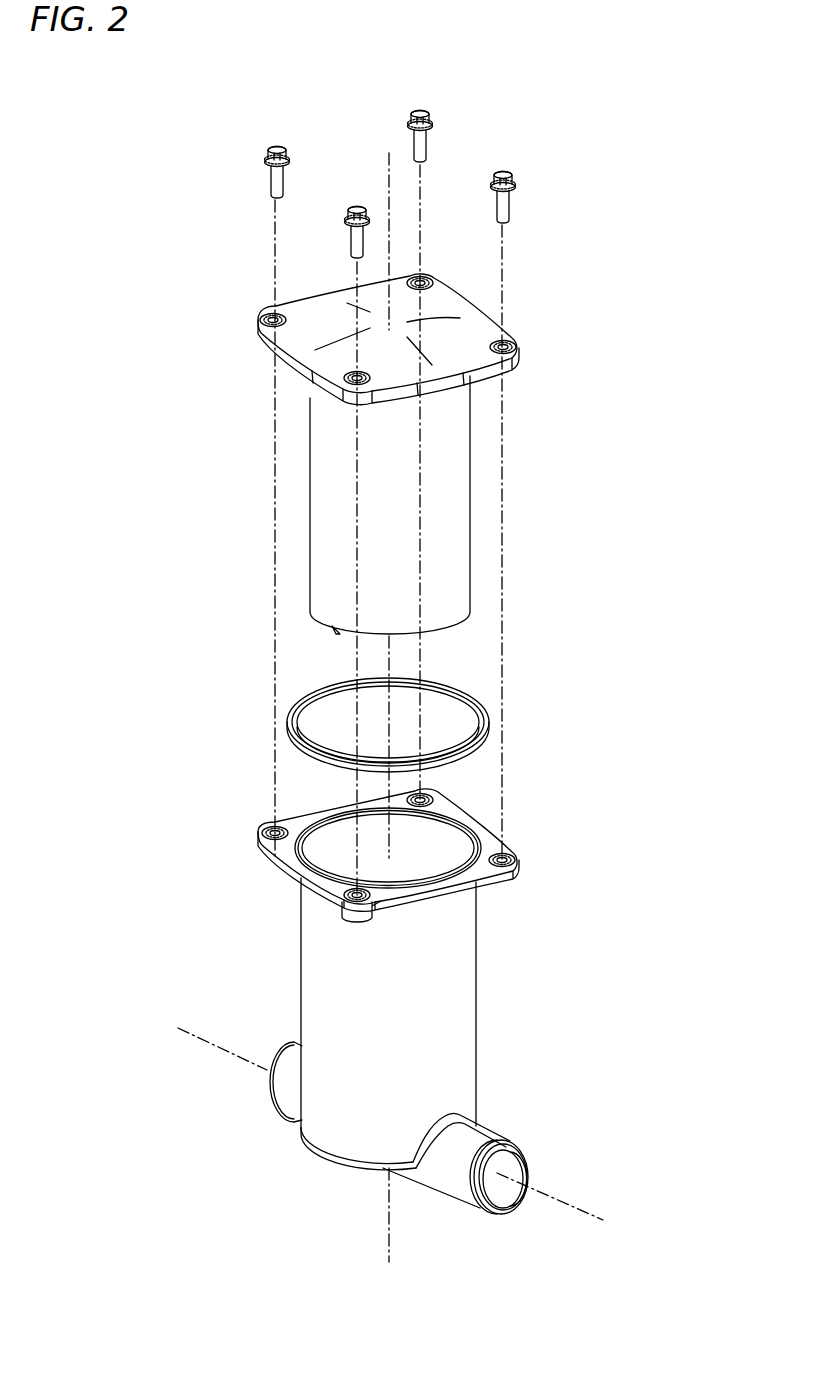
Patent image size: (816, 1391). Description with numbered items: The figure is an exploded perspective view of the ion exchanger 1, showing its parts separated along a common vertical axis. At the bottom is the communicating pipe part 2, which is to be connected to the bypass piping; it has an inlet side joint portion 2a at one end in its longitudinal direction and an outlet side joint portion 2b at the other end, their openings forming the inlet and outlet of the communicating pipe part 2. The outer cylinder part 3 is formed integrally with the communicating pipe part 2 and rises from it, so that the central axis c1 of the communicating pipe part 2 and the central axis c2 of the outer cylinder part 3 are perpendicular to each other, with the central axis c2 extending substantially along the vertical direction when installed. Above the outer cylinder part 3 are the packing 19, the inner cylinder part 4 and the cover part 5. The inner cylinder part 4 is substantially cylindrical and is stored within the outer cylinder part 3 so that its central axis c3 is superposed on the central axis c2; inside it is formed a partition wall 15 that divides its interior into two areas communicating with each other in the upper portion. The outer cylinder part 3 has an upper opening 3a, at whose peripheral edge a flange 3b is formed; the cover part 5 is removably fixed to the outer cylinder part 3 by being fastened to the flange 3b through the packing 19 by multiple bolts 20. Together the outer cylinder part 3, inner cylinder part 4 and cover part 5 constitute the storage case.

The ion exchanger 1 is at (622, 228).
The communicating pipe part 2 is at (488, 1130).
The inlet side joint portion 2a is at (482, 1207).
The outlet side joint portion 2b is at (270, 1105).
The outer cylinder part 3 is at (478, 994).
The upper opening 3a is at (437, 825).
The flange 3b is at (283, 866).
The inner cylinder part 4 is at (468, 535).
The cover part 5 is at (443, 310).
The partition wall 15 is at (338, 632).
The packing 19 is at (446, 684).
The bolts 20 is at (279, 147).
The central axis of the communicating pipe part c1 is at (552, 1195).
The central axis of the outer cylinder part c2 is at (319, 1215).
The central axis of the inner cylinder part c3 is at (388, 1192).